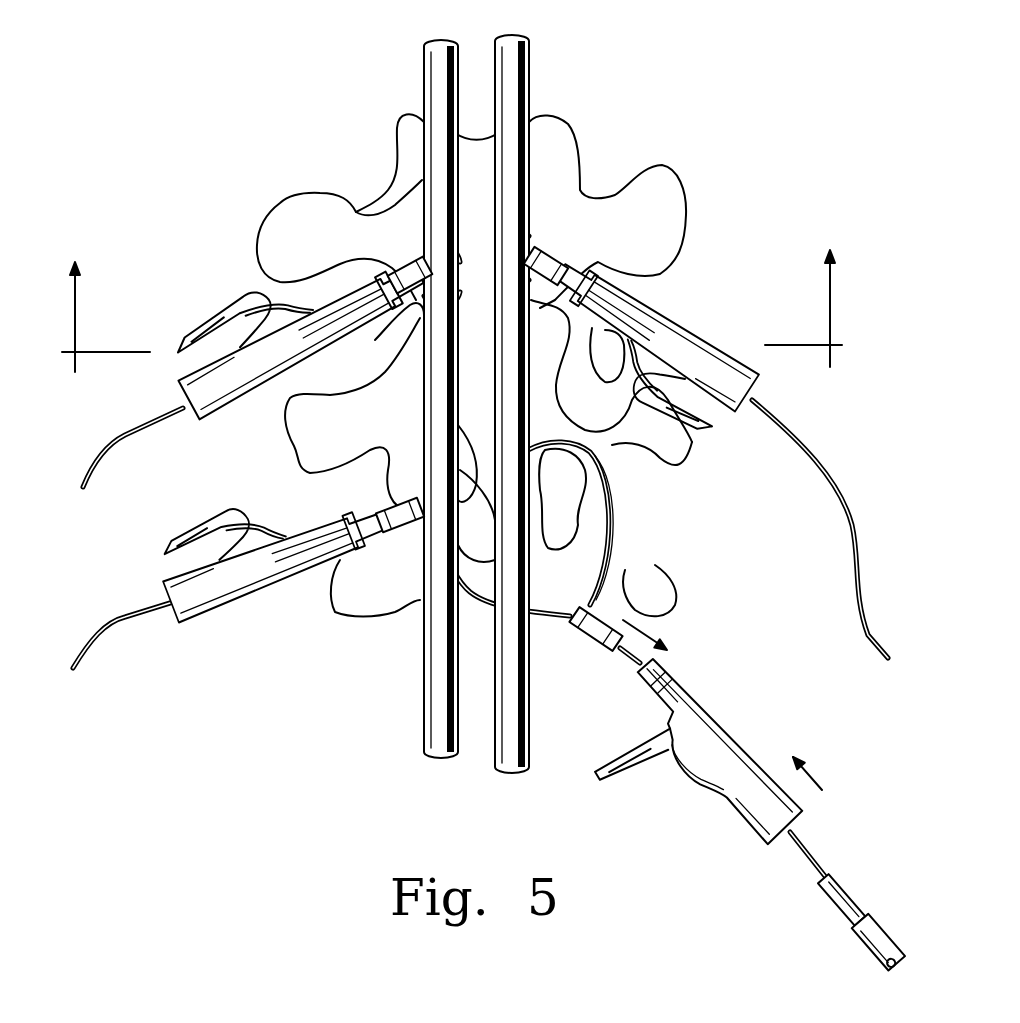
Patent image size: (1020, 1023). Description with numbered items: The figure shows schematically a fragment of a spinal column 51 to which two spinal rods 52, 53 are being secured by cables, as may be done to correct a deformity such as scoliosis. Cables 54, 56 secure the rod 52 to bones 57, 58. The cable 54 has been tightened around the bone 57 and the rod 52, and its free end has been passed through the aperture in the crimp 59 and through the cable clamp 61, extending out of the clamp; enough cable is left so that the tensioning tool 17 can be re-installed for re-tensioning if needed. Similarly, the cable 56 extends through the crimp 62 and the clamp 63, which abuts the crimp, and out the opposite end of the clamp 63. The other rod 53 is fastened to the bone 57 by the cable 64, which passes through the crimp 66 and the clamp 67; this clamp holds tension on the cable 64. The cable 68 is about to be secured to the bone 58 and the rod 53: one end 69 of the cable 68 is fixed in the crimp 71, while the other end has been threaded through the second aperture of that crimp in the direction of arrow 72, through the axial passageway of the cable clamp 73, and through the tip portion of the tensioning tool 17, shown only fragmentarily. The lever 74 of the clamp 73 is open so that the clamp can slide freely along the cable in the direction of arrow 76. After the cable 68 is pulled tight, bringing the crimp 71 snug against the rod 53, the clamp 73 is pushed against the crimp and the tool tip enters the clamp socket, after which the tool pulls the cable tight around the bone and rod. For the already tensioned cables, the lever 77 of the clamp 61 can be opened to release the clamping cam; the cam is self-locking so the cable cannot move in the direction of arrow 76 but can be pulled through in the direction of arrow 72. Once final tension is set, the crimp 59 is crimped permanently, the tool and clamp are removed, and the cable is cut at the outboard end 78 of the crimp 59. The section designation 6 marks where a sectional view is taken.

The spinal column 51 is at (318, 108).
The spinal rod 52 is at (438, 68).
The spinal rod 53 is at (530, 64).
The cable 54 is at (116, 448).
The cable 56 is at (125, 615).
The bone 57 is at (420, 210).
The bone 58 is at (420, 625).
The crimp 59 is at (397, 273).
The cable clamp 61 is at (247, 372).
The crimp 62 is at (388, 512).
The clamp 63 is at (243, 580).
The cable 64 is at (837, 497).
The crimp 66 is at (553, 257).
The clamp 67 is at (647, 343).
The cable 68 is at (609, 512).
The end of cable 69 is at (622, 600).
The crimp 71 is at (590, 638).
The arrow 72 is at (640, 628).
The cable clamp 73 is at (668, 694).
The lever 74 is at (607, 765).
The arrow 76 is at (818, 778).
The lever 77 is at (190, 342).
The outboard end 78 is at (380, 335).
The tensioning tool 17 is at (866, 897).
The section line 6- 6 is at (459, 311).